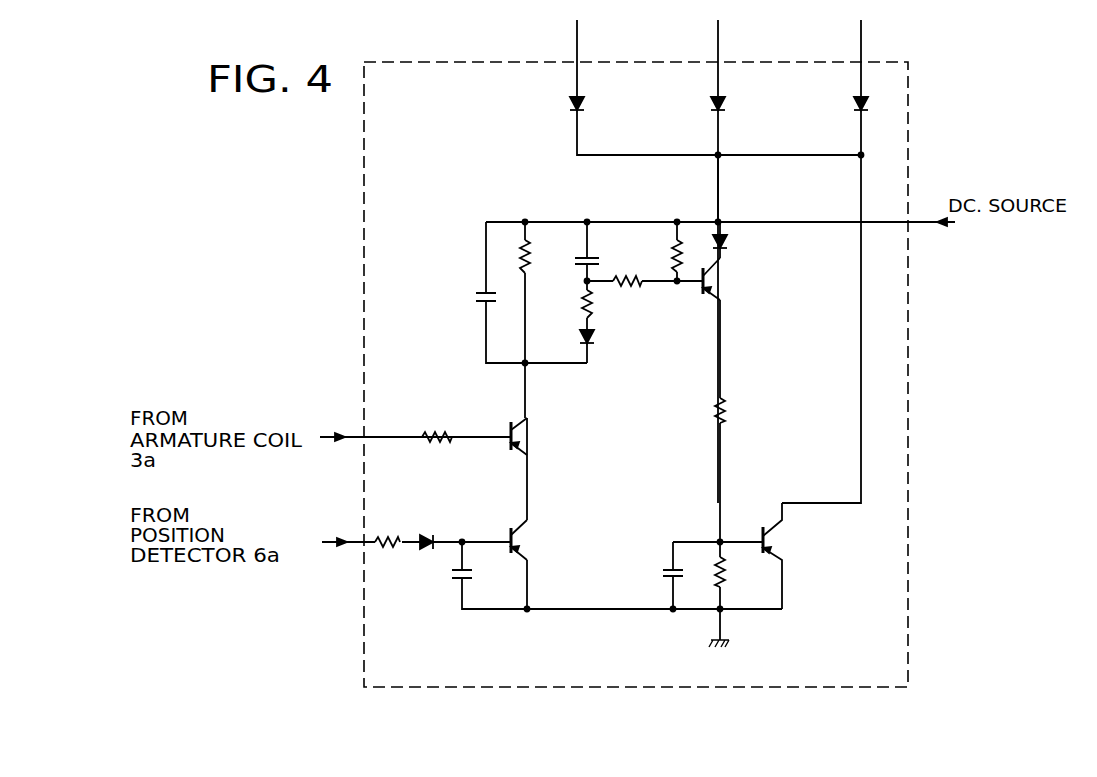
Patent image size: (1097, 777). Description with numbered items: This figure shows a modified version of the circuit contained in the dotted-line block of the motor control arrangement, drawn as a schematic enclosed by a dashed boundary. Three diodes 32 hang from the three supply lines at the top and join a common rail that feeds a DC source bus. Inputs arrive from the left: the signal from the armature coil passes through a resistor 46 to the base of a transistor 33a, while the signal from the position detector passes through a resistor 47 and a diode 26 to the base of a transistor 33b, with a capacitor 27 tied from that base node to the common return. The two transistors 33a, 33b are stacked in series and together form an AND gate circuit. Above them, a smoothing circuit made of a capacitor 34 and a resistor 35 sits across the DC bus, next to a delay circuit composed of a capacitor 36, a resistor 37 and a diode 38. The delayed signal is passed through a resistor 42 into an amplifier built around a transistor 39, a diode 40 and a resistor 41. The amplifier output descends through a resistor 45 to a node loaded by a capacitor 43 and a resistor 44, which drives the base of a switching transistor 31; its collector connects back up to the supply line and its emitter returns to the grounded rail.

The diode 32 is at (586, 106).
The capacitor 34 is at (474, 299).
The resistor 35 is at (527, 258).
The capacitor 36 is at (596, 257).
The resistor 37 is at (582, 308).
The diode 38 is at (596, 339).
The transistor 39 is at (718, 282).
The diode 40 is at (728, 244).
The resistor 41 is at (674, 259).
The resistor 42 is at (622, 288).
The capacitor 43 is at (660, 573).
The resistor 44 is at (727, 574).
The resistor 45 is at (715, 410).
The resistor 46 is at (438, 432).
The resistor 47 is at (389, 537).
The diode 26 is at (422, 536).
The capacitor 27 is at (450, 574).
The switching transistor 31 is at (773, 542).
The transistor 33a is at (527, 437).
The transistor 33b is at (527, 542).